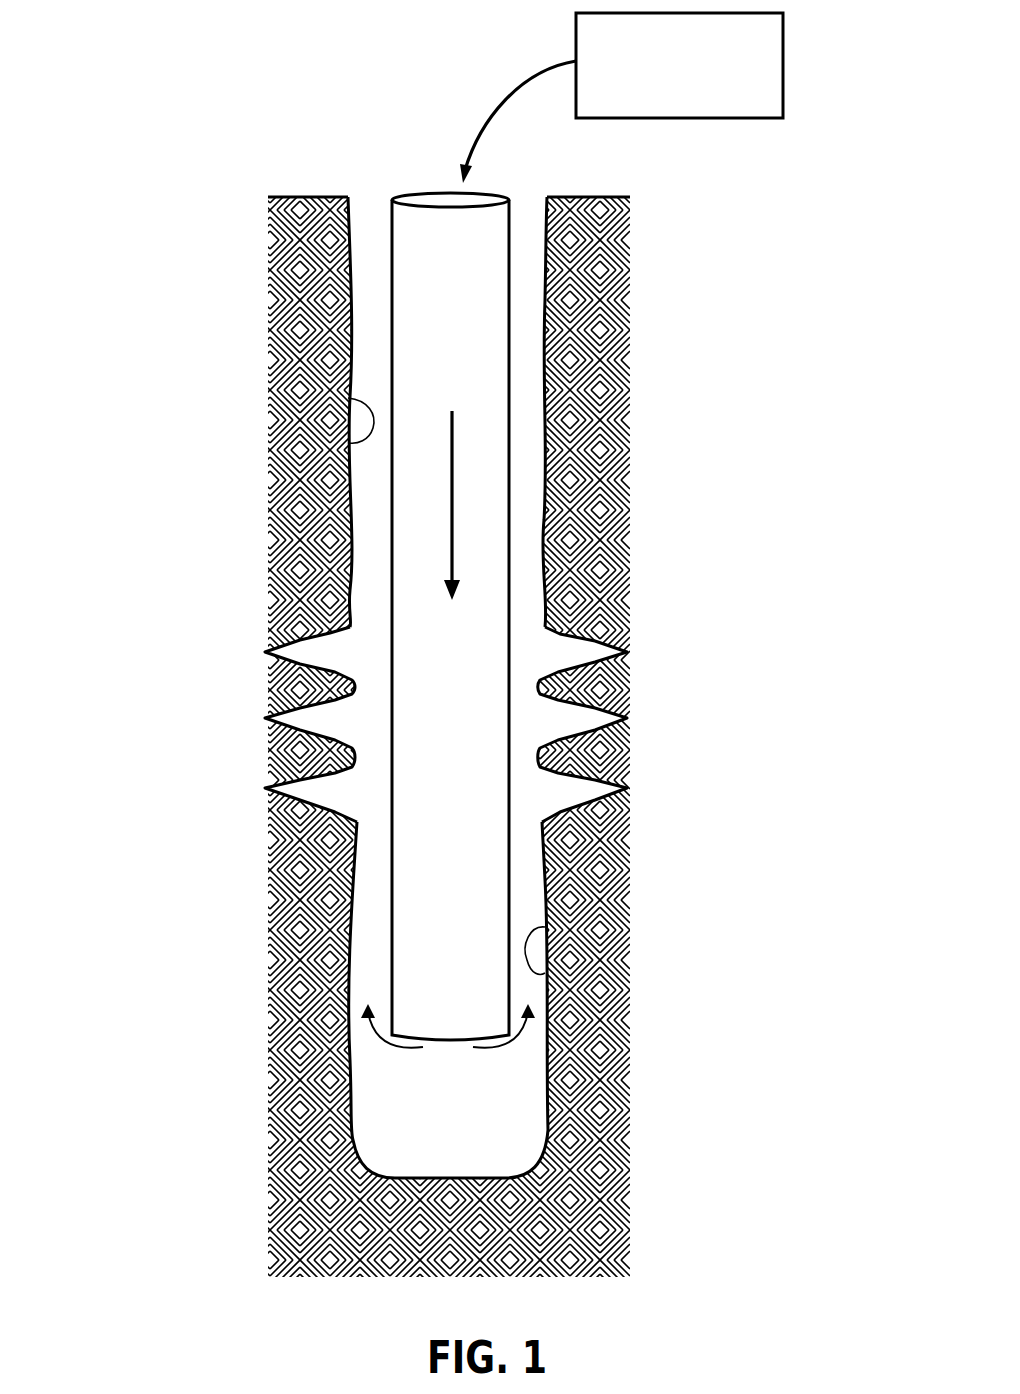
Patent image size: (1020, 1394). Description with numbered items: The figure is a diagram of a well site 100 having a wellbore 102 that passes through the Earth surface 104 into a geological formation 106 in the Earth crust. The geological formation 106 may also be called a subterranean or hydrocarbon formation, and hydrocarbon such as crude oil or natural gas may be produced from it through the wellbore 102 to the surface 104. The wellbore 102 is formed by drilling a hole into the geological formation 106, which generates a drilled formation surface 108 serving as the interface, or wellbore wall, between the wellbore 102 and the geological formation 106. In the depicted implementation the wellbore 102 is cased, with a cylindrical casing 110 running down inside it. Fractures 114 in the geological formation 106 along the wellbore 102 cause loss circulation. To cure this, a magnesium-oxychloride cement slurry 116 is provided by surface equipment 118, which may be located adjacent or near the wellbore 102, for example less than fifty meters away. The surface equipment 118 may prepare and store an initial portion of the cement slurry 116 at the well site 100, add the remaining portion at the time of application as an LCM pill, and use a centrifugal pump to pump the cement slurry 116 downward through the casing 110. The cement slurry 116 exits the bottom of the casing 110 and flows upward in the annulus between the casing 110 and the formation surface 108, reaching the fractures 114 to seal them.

The well site 100 is at (180, 143).
The wellbore 102 is at (532, 608).
The Earth surface 104 is at (293, 197).
The geological formation 106 is at (296, 299).
The drilled formation surface 108 is at (369, 420).
The cylindrical casing 110 is at (509, 412).
The fractures 114 is at (592, 707).
The magnesium-oxychloride cement slurry 116 is at (497, 113).
The surface equipment 118 is at (707, 81).